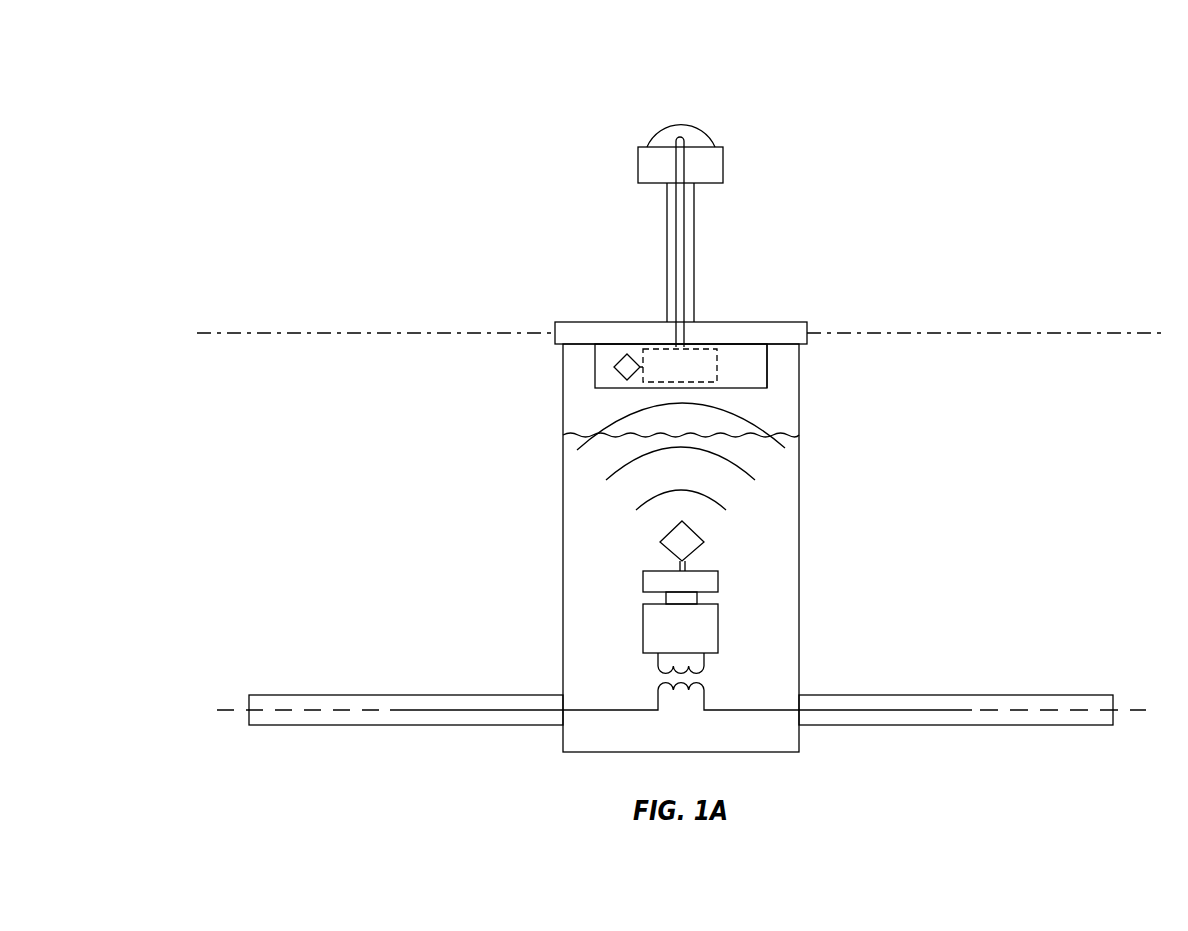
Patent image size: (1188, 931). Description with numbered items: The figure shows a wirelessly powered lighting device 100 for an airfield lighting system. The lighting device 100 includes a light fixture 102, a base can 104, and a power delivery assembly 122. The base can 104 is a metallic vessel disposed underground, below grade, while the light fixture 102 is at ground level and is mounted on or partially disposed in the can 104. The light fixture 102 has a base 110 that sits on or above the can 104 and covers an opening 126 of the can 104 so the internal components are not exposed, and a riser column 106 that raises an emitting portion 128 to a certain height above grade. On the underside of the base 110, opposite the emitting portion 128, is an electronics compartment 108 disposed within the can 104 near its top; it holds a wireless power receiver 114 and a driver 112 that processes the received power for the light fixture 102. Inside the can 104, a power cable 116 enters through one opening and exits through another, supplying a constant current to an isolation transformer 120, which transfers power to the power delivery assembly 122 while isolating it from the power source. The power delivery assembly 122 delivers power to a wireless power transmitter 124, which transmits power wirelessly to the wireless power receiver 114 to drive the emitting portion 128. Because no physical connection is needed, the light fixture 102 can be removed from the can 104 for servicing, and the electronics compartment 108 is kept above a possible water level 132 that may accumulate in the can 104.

The wirelessly powered lighting device 100 is at (1075, 118).
The light fixture 102 is at (725, 163).
The base can 104 is at (799, 407).
The riser column 106 is at (694, 233).
The electronics compartment 108 is at (595, 364).
The base 110 is at (567, 322).
The driver 112 is at (718, 367).
The wireless power receiver 114 is at (617, 359).
The power cable 116 is at (527, 710).
The isolation transformer 120 is at (700, 682).
The power delivery assembly 122 is at (718, 628).
The wireless power transmitter 124 is at (718, 583).
The opening 126 is at (783, 353).
The emitting portion 128 is at (680, 124).
The water level 132 is at (570, 433).